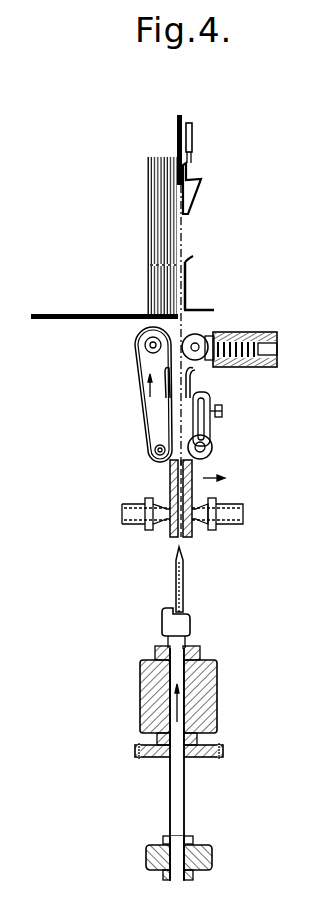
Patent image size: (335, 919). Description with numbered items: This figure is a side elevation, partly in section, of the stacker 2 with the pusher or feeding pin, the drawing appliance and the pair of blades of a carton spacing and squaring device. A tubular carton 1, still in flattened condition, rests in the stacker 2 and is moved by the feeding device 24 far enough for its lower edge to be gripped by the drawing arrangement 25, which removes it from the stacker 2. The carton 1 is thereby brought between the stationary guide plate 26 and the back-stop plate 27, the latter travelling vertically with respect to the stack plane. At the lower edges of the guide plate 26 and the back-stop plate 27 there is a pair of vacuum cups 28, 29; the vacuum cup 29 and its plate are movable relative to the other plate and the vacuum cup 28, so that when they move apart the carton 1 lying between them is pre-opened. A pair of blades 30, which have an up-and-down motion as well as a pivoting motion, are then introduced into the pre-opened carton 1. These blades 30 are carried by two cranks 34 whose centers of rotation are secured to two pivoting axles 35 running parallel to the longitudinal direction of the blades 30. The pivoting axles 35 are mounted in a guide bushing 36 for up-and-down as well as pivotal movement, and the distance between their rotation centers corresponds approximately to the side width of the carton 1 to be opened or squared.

The tubular carton 1 is at (150, 226).
The stacker 2 is at (66, 315).
The feeding device 24 is at (203, 180).
The drawing arrangement 25 is at (152, 440).
The stationary guide plate 26 is at (170, 482).
The back-stop plate 27 is at (205, 470).
The vacuum cup 28 is at (135, 523).
The vacuum cup 29 is at (236, 524).
The blades 30 is at (185, 568).
The cranks 34 is at (162, 622).
The pivoting axles 35 is at (188, 641).
The guide bushing 36 is at (212, 690).